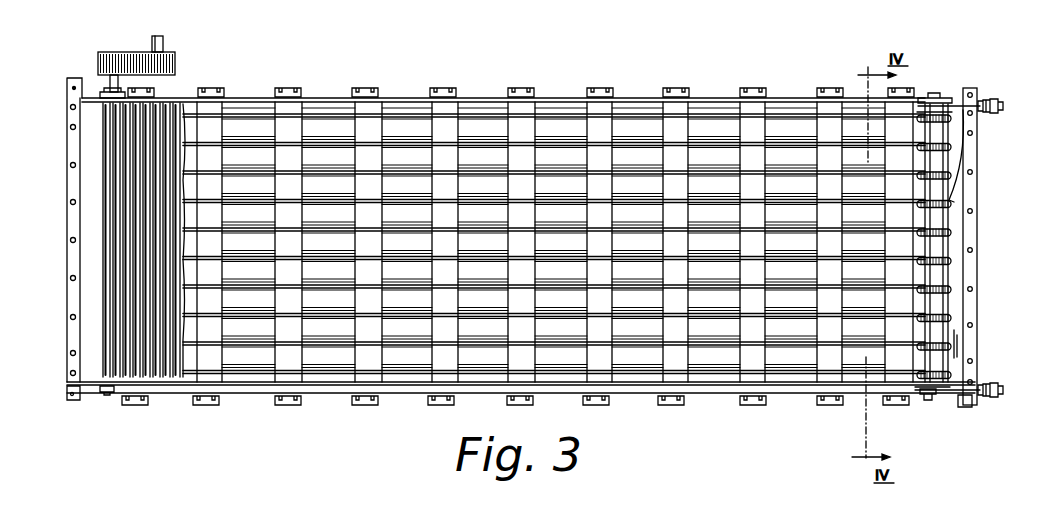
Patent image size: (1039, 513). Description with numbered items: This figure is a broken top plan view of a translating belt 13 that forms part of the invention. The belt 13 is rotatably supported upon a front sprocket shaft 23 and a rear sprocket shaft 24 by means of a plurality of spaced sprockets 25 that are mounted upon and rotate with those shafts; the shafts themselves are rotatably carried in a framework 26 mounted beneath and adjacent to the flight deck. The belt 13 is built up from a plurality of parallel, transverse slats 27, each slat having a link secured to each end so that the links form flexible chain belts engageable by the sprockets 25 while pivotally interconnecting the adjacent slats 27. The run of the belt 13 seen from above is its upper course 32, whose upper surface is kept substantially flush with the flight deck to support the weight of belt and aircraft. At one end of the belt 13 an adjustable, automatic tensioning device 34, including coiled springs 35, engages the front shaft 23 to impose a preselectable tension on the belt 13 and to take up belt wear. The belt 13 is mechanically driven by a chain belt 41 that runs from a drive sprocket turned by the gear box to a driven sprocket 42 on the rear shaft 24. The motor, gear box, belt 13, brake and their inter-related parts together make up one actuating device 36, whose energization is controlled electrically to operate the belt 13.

The belt 13 is at (243, 397).
The front sprocket shaft 23 is at (929, 402).
The rear sprocket shaft 24 is at (100, 88).
The sprockets 25 is at (952, 200).
The framework 26 is at (631, 404).
The transverse slats 27 is at (130, 212).
The upper course 32 is at (157, 368).
The tensioning device 34 is at (986, 382).
The coiled springs 35 is at (979, 393).
The actuating device 36 is at (350, 410).
The chain belt 41 is at (166, 62).
The driven sprocket 42 is at (112, 74).